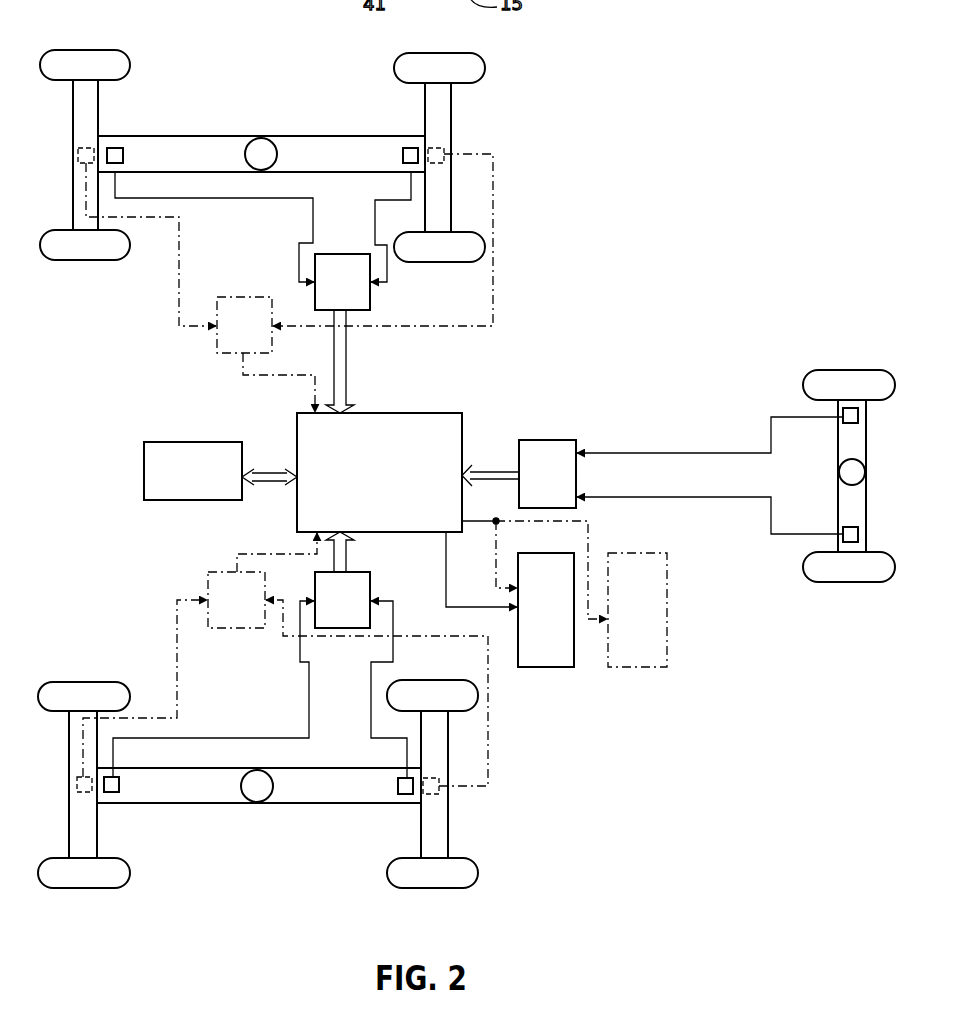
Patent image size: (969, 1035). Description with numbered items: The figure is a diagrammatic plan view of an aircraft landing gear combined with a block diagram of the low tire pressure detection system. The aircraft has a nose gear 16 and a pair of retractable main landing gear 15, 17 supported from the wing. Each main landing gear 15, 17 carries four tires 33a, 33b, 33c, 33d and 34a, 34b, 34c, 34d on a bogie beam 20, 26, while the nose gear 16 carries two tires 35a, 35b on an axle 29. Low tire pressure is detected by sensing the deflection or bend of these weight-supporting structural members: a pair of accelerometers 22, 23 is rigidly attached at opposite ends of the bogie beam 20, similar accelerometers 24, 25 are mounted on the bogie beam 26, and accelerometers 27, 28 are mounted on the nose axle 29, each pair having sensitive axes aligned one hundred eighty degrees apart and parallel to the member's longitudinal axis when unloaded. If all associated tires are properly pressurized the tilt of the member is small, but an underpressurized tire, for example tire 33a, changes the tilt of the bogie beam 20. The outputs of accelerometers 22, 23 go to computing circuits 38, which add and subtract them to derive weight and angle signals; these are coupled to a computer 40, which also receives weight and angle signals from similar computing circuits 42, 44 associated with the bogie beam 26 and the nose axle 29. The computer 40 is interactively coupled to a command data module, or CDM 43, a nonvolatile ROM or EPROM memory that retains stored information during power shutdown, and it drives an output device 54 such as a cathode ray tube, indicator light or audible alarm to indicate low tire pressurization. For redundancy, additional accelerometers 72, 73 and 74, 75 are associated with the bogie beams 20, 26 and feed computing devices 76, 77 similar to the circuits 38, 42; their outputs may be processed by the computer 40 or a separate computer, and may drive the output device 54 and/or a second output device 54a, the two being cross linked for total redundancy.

The main landing gear 15 is at (254, 809).
The nose gear 16 is at (798, 397).
The main landing gear 17 is at (222, 135).
The bogie beam 20 is at (328, 808).
The accelerometer 22 is at (119, 778).
The accelerometer 23 is at (398, 786).
The accelerometer 24 is at (115, 148).
The accelerometer 25 is at (411, 148).
The bogie beam 26 is at (325, 145).
The accelerometer 27 is at (840, 424).
The accelerometer 28 is at (843, 530).
The axle 29 is at (862, 460).
The tire 33a is at (452, 878).
The tire 33b is at (462, 692).
The tire 33c is at (108, 688).
The tire 33d is at (125, 880).
The tire 34a is at (458, 252).
The tire 34b is at (465, 72).
The tire 34c is at (68, 50).
The tire 34d is at (120, 250).
The tire 35a is at (855, 378).
The tire 35b is at (868, 572).
The computing circuits 38 is at (363, 583).
The computer 40 is at (389, 478).
The computing circuits 42 is at (363, 300).
The command data module 43 is at (212, 448).
The computing circuits 44 is at (562, 413).
The output device 54 is at (557, 618).
The second output device 54a is at (652, 623).
The accelerometer 72 is at (92, 794).
The accelerometer 73 is at (410, 812).
The accelerometer 74 is at (78, 157).
The accelerometer 75 is at (440, 150).
The computing device 76 is at (215, 577).
The computing device 77 is at (230, 327).